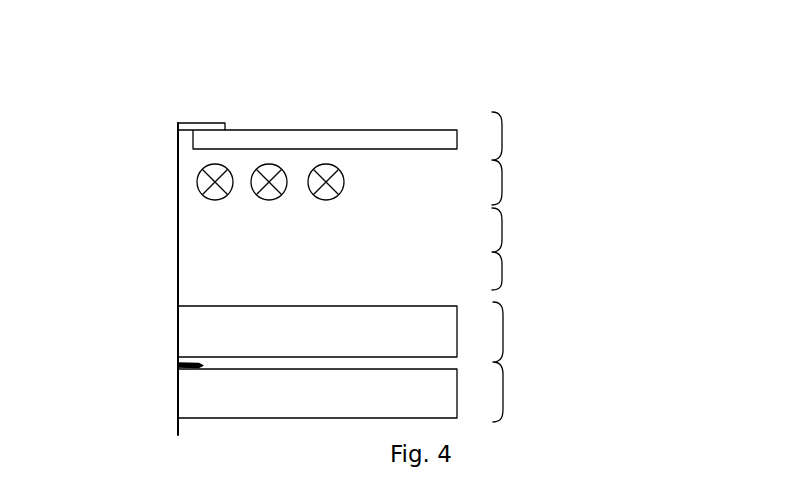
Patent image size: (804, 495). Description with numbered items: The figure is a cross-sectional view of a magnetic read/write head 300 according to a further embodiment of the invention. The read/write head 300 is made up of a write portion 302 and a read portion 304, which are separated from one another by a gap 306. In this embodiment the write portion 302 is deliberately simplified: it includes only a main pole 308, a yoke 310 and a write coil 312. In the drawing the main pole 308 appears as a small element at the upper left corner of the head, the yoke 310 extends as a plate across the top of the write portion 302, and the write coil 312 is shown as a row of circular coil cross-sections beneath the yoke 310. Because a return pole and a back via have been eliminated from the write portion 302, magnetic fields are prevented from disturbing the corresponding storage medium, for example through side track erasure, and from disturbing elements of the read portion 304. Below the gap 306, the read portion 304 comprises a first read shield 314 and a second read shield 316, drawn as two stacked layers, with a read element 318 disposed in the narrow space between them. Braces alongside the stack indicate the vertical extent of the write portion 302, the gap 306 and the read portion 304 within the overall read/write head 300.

The read/write head 300 is at (592, 117).
The write portion 302 is at (528, 158).
The read portion 304 is at (529, 362).
The gap 306 is at (528, 249).
The main pole 308 is at (205, 123).
The yoke 310 is at (327, 130).
The write coil 312 is at (205, 182).
The first read shield 314 is at (177, 333).
The second read shield 316 is at (198, 403).
The read element 318 is at (178, 368).